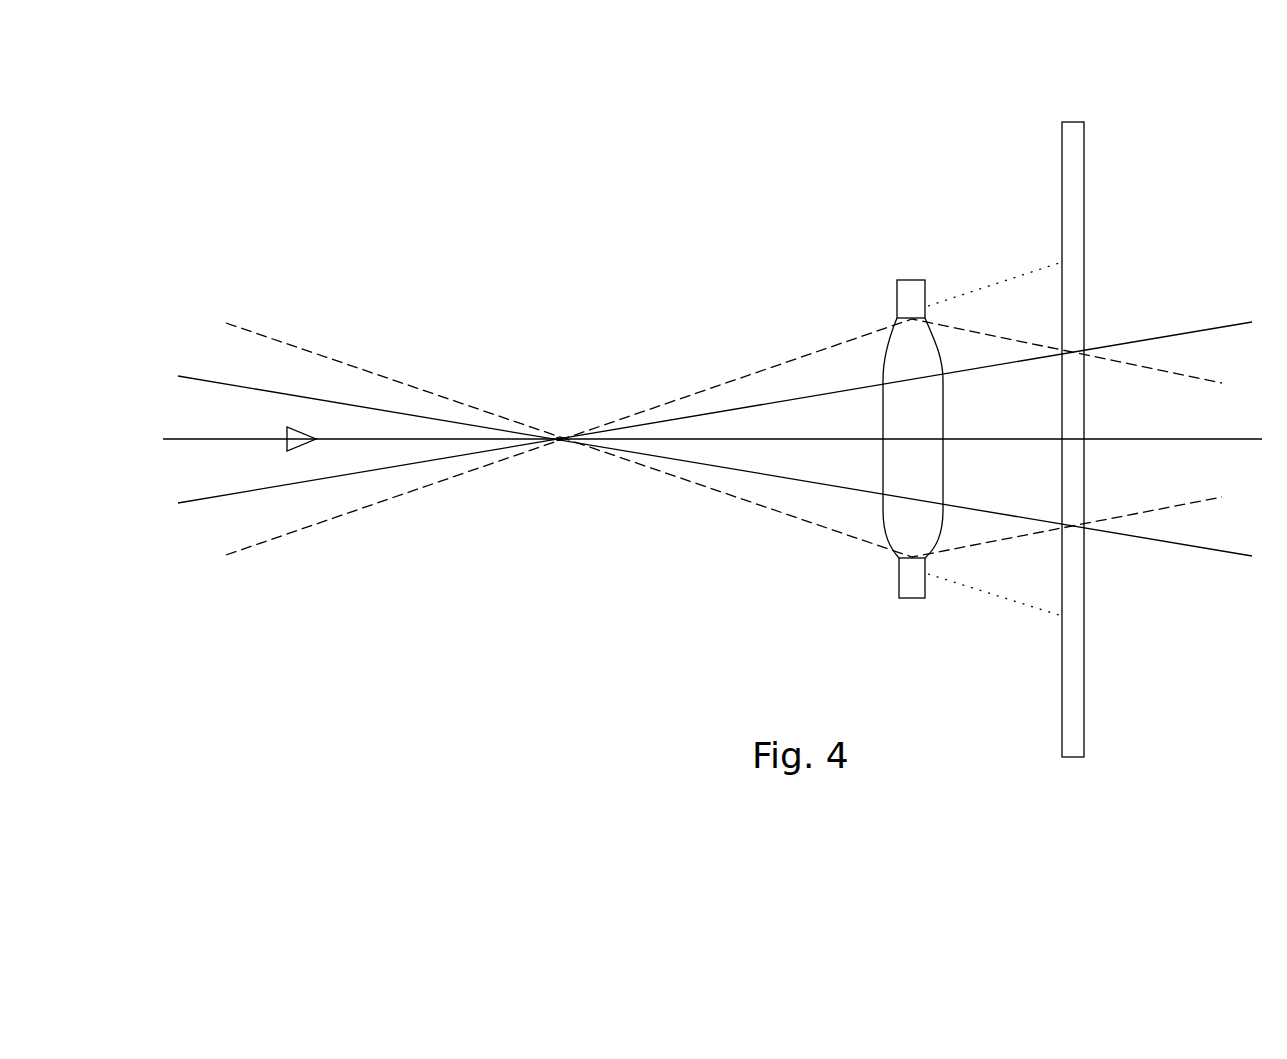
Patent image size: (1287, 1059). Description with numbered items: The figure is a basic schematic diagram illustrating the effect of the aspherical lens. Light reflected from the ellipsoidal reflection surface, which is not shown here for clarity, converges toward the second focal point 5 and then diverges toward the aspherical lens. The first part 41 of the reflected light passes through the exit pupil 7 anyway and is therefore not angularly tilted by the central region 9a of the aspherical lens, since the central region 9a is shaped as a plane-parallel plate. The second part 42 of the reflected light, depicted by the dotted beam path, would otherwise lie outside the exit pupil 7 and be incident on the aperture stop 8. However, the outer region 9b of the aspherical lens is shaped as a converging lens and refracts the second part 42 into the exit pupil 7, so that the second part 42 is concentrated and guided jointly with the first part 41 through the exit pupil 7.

The second focal point 5 is at (556, 436).
The exit pupil 7 is at (967, 260).
The aperture stop 8 is at (1072, 723).
The central region of the aspherical lens 9a is at (907, 462).
The outer region of the aspherical lens 9b is at (915, 530).
The first part of the light 41 is at (370, 432).
The second part of the light 42 is at (268, 372).